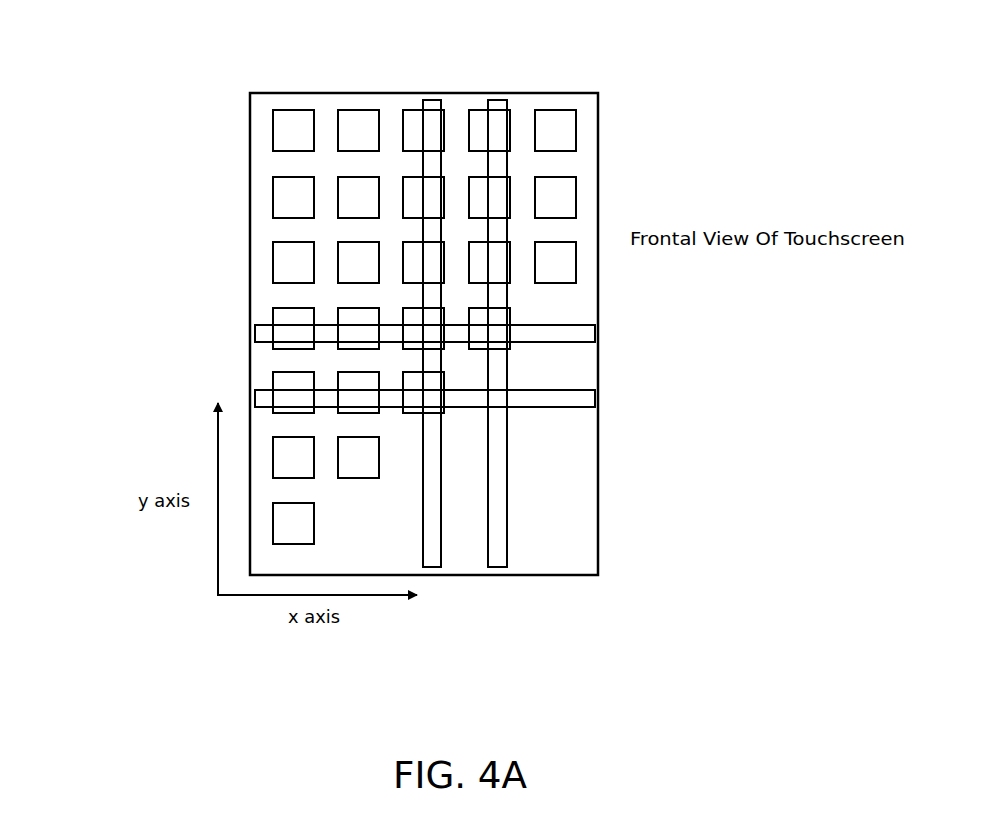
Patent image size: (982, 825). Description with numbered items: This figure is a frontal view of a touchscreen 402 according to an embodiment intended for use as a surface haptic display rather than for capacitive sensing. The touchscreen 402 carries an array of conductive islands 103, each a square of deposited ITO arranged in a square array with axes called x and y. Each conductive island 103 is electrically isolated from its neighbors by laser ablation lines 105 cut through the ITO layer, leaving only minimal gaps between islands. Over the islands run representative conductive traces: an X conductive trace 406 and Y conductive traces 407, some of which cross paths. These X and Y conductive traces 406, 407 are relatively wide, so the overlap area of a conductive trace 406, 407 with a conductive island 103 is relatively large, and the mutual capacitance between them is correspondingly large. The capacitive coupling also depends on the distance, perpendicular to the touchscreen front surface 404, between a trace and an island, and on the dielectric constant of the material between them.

The conductive islands 103 is at (283, 120).
The laser ablation lines 105 is at (455, 128).
The touchscreen 402 is at (600, 90).
The touchscreen front surface 404 is at (554, 492).
The X conductive trace 406 is at (255, 392).
The Y conductive traces 407 is at (430, 565).